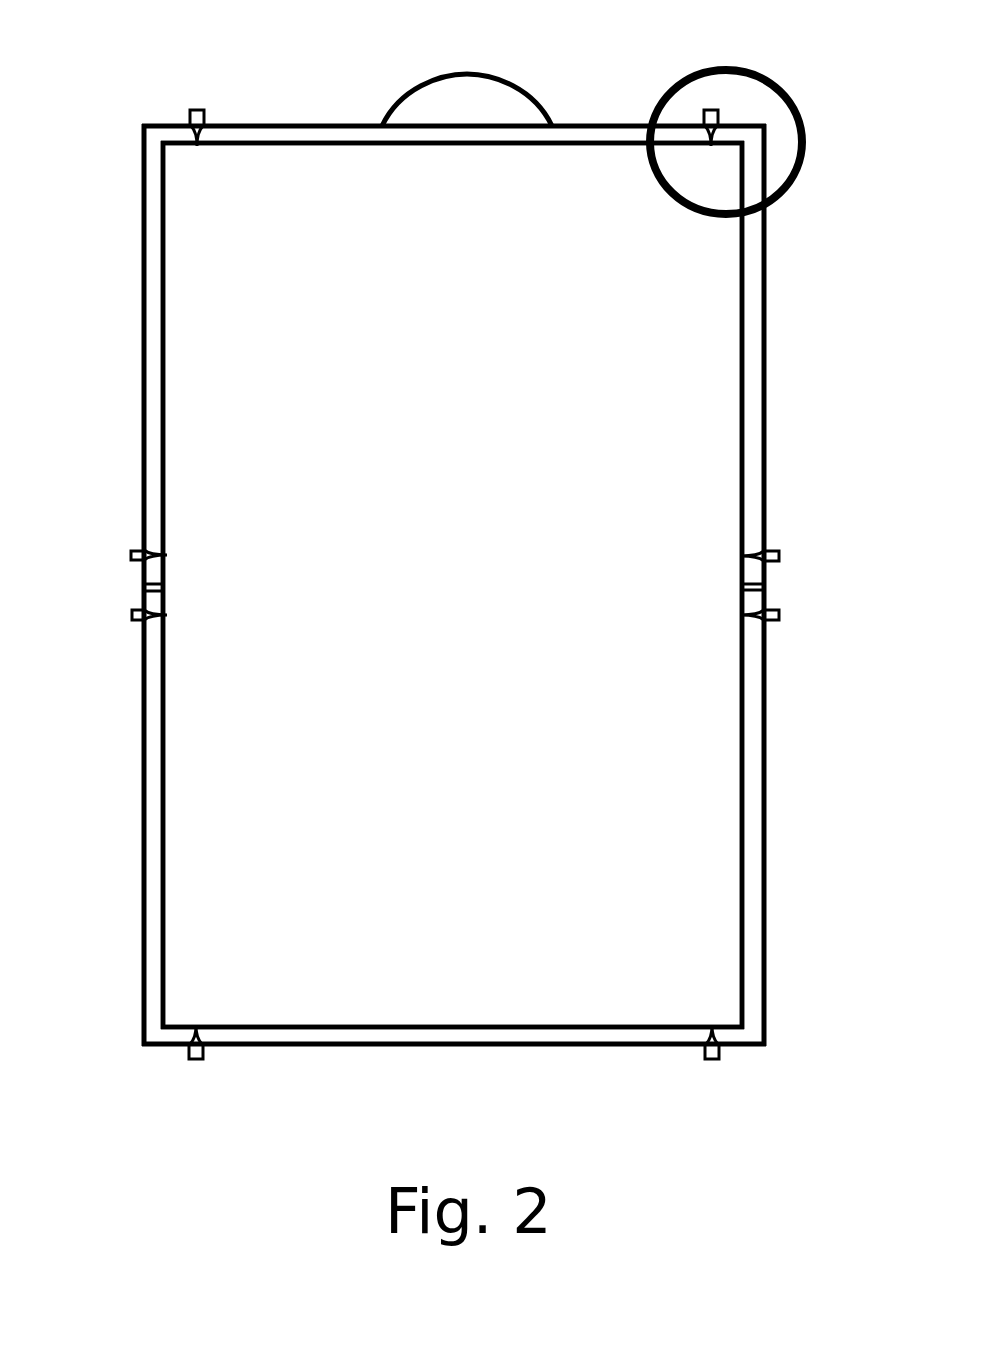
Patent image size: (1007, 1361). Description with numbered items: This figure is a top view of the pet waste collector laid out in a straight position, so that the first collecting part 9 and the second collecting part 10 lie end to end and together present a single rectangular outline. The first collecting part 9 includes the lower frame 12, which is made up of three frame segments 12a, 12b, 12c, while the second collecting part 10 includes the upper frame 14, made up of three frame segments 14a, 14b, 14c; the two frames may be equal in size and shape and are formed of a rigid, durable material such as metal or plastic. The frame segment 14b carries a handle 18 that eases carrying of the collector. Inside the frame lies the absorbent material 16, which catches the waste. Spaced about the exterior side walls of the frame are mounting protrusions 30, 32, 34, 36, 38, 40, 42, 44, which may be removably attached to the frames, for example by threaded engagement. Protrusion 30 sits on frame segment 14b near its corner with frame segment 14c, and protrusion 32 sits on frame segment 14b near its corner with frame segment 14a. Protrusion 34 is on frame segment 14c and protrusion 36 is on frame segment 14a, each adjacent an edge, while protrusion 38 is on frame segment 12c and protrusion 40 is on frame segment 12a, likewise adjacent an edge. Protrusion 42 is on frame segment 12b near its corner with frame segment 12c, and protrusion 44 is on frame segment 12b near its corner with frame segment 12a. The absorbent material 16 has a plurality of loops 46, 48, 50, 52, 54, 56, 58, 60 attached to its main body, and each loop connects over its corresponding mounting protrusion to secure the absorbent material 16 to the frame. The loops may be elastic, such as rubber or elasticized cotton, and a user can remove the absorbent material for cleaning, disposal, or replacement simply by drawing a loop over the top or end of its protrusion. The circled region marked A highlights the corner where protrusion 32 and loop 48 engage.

The first collecting part 9 is at (92, 810).
The second collecting part 10 is at (104, 363).
The lower frame 12 is at (466, 637).
The frame segment 12a is at (750, 867).
The frame segment 12b is at (462, 1035).
The frame segment 12c is at (153, 845).
The upper frame 14 is at (459, 546).
The frame segment 14a is at (753, 310).
The frame segment 14b is at (295, 137).
The frame segment 14c is at (157, 345).
The absorbent material 16 is at (713, 932).
The handle 18 is at (509, 92).
The mounting protrusion 30 is at (199, 126).
The mounting protrusion 32 is at (711, 118).
The mounting protrusion 34 is at (135, 552).
The mounting protrusion 36 is at (780, 556).
The mounting protrusion 38 is at (134, 617).
The mounting protrusion 40 is at (780, 615).
The mounting protrusion 42 is at (194, 1046).
The mounting protrusion 44 is at (717, 1046).
The loop 46 is at (191, 137).
The loop 48 is at (707, 135).
The loop 50 is at (158, 557).
The loop 52 is at (757, 553).
The loop 54 is at (152, 620).
The loop 56 is at (757, 619).
The loop 58 is at (200, 1040).
The loop 60 is at (708, 1040).
The detail area A is at (745, 71).